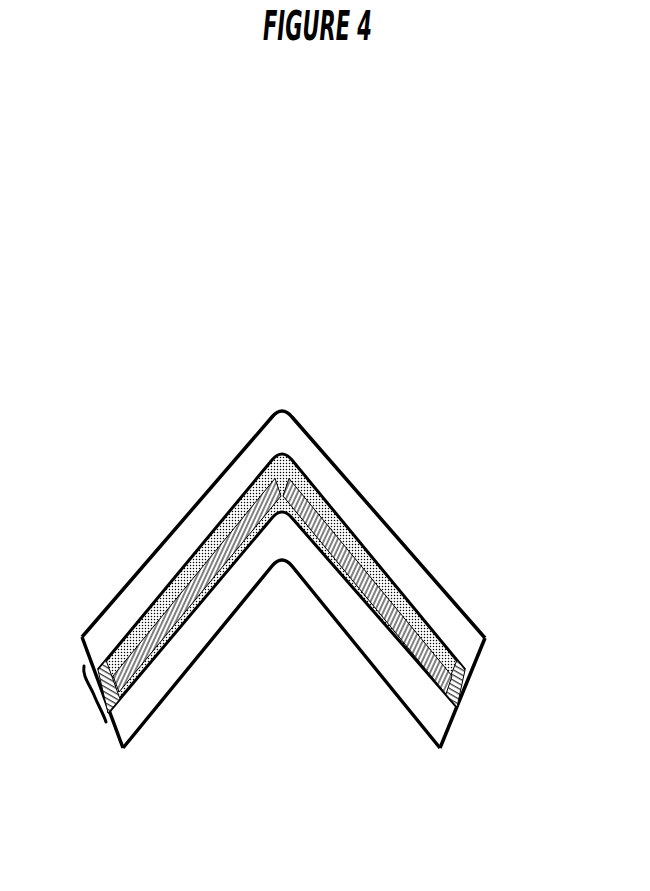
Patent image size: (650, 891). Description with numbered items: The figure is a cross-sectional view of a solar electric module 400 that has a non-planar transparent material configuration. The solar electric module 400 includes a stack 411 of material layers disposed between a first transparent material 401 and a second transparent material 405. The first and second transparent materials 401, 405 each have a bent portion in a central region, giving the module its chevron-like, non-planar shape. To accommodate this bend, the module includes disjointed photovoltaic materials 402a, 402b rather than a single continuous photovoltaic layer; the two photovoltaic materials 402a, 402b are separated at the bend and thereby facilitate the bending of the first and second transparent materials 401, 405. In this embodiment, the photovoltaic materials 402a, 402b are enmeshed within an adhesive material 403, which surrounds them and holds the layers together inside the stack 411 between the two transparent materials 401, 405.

The solar electric module 400 is at (161, 309).
The first transparent material 401 is at (480, 653).
The photovoltaic material 402a is at (90, 698).
The photovoltaic material 402b is at (427, 678).
The adhesive material 403 is at (465, 678).
The second transparent material 405 is at (108, 728).
The stack of material layers 411 is at (87, 707).